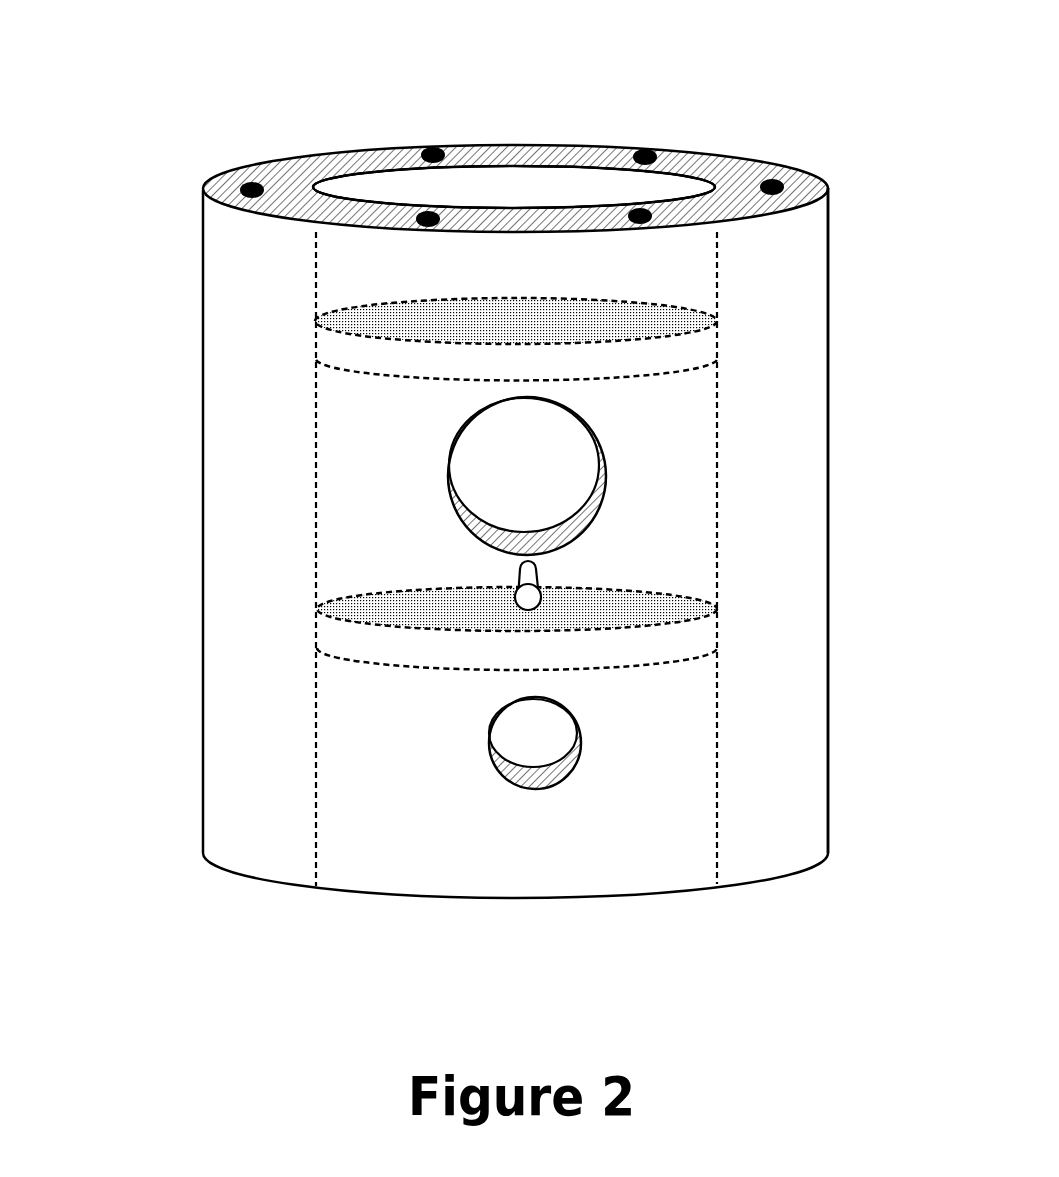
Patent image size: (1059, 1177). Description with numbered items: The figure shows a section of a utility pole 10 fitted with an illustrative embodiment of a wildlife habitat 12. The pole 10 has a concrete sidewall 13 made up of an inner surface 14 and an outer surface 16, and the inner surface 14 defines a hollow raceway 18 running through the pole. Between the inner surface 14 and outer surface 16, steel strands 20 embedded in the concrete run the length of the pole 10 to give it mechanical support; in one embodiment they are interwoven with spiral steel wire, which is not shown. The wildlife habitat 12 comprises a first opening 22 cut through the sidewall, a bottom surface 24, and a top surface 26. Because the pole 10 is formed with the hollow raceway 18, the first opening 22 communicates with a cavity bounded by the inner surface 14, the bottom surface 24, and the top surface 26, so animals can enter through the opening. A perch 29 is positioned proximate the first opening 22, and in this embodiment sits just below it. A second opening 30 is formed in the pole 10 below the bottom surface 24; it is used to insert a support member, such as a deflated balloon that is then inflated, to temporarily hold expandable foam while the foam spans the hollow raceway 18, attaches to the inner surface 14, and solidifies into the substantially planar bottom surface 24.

The pole 10 is at (152, 145).
The wildlife habitat 12 is at (372, 545).
The concrete sidewall 13 is at (328, 165).
The inner surface 14 is at (700, 192).
The outer surface 16 is at (830, 247).
The hollow raceway 18 is at (513, 200).
The steel strands 20 is at (775, 183).
The first opening 22 is at (452, 455).
The bottom surface 24 is at (673, 658).
The top surface 26 is at (673, 372).
The perch 29 is at (540, 580).
The second opening 30 is at (488, 748).